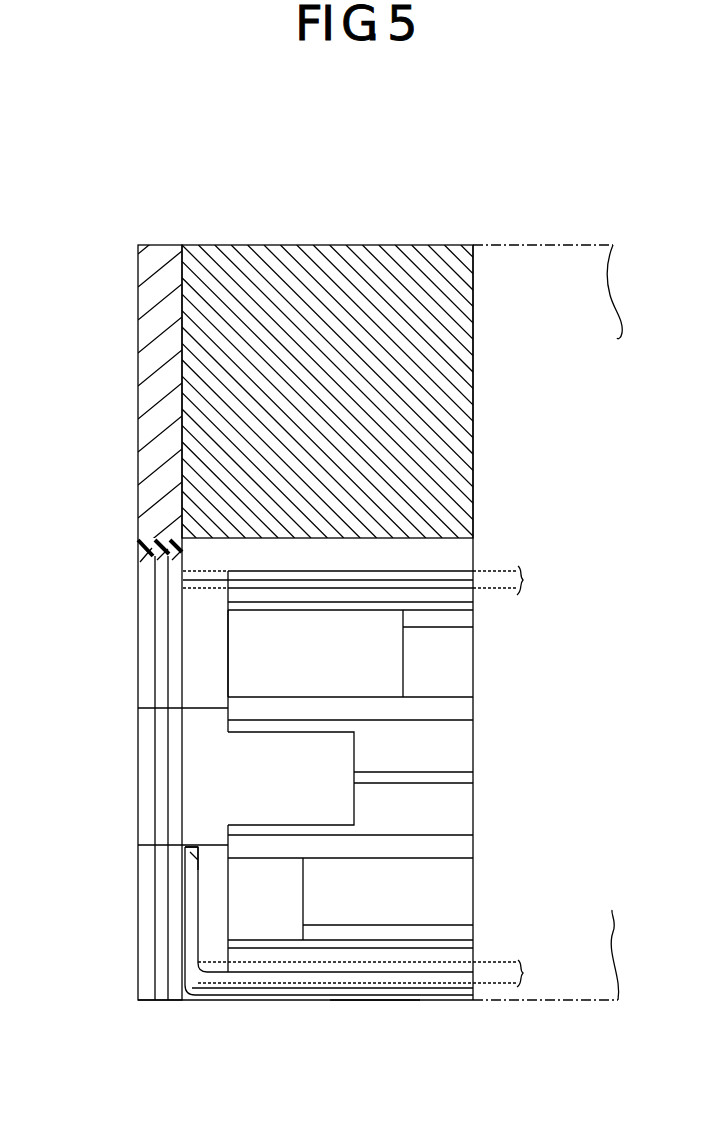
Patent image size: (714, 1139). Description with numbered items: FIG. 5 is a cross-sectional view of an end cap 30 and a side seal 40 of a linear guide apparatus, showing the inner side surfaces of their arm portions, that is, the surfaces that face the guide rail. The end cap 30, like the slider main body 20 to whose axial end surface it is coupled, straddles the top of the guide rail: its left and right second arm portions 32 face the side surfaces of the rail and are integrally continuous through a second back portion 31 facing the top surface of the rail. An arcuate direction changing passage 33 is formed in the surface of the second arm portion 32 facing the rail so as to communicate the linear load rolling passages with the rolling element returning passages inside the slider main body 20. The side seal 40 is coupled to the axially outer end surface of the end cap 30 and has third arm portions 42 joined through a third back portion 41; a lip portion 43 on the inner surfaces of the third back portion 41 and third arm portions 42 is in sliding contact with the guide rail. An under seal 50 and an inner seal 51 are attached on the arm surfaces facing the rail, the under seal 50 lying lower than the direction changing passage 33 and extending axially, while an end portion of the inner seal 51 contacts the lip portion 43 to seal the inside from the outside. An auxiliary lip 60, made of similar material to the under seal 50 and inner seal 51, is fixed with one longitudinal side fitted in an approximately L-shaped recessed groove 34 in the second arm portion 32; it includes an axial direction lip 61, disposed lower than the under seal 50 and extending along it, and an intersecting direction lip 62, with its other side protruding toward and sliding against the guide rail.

The slider main body 20 is at (567, 245).
The end cap 30 is at (328, 338).
The second back portion 31 is at (397, 273).
The second arm portion 32 is at (460, 752).
The direction changing passage 33 is at (460, 663).
The recessed groove 34 is at (193, 920).
The side seal 40 is at (136, 569).
The third back portion 41 is at (148, 373).
The third arm portion 42 is at (148, 785).
The lip portion 43 is at (148, 632).
The under seal 50 is at (488, 962).
The inner seal 51 is at (488, 569).
The auxiliary lip 60 is at (275, 1000).
The axial direction lip 61 is at (368, 1001).
The intersecting direction lip 62 is at (188, 888).